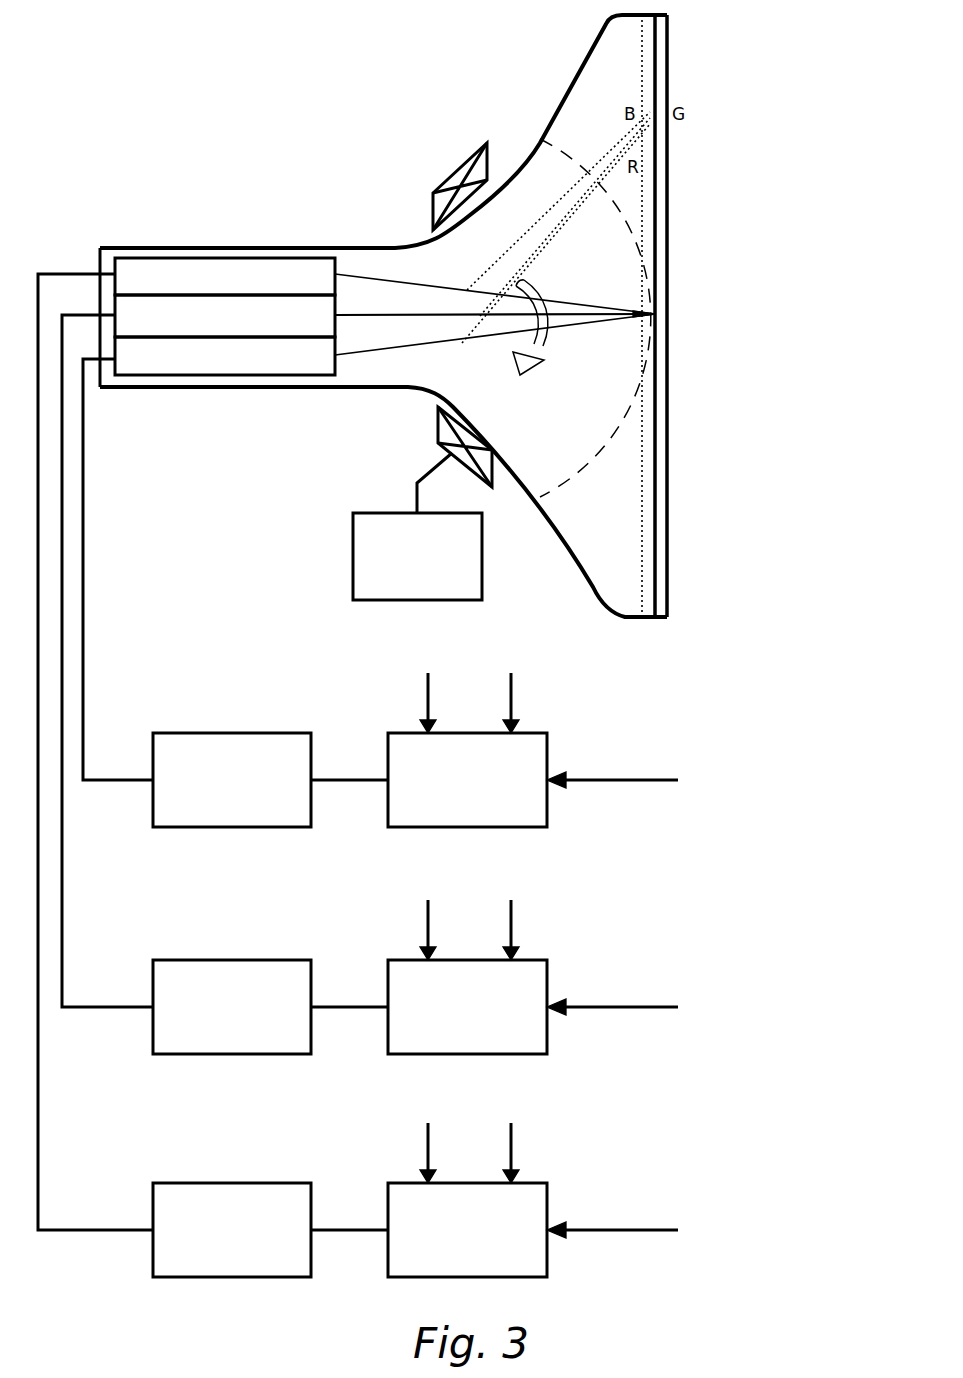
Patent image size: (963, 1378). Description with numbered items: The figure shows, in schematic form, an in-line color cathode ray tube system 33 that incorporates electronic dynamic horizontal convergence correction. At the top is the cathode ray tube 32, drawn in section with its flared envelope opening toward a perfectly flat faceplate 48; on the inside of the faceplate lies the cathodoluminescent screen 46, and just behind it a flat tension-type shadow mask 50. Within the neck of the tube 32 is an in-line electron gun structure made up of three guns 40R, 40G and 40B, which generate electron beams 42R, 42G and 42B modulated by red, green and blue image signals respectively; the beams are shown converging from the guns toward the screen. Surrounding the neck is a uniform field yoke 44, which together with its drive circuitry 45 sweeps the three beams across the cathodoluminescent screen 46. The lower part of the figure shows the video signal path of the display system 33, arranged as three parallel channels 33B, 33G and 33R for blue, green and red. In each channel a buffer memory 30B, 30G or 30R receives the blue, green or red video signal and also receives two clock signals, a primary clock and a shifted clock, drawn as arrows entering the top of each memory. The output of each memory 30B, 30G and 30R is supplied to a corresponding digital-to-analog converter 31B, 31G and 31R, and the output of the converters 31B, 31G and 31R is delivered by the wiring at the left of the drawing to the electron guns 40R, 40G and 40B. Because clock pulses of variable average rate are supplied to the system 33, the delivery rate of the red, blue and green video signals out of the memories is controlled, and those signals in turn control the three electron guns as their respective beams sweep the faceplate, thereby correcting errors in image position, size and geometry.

The cathode ray tube 32 is at (562, 571).
The cathodoluminescent screen 46 is at (665, 218).
The faceplate 48 is at (662, 298).
The shadow mask 50 is at (642, 352).
The uniform field yoke 44 is at (468, 160).
The yoke drive circuitry 45 is at (378, 513).
The red electron gun 40R is at (130, 268).
The green electron gun 40G is at (200, 315).
The blue electron gun 40B is at (282, 358).
The red electron beam 42R is at (553, 302).
The green electron beam 42G is at (570, 312).
The blue electron beam 42B is at (553, 328).
The color cathode ray tube system 33 is at (698, 670).
The blue channel circuitry 33B is at (485, 747).
The green channel circuitry 33G is at (486, 974).
The red channel circuitry 33R is at (484, 1197).
The blue digital-to-analog converter 31B is at (218, 732).
The blue buffer memory 30B is at (413, 732).
The green digital-to-analog converter 31G is at (218, 959).
The green buffer memory 30G is at (413, 959).
The red digital-to-analog converter 31R is at (218, 1182).
The red buffer memory 30R is at (413, 1182).